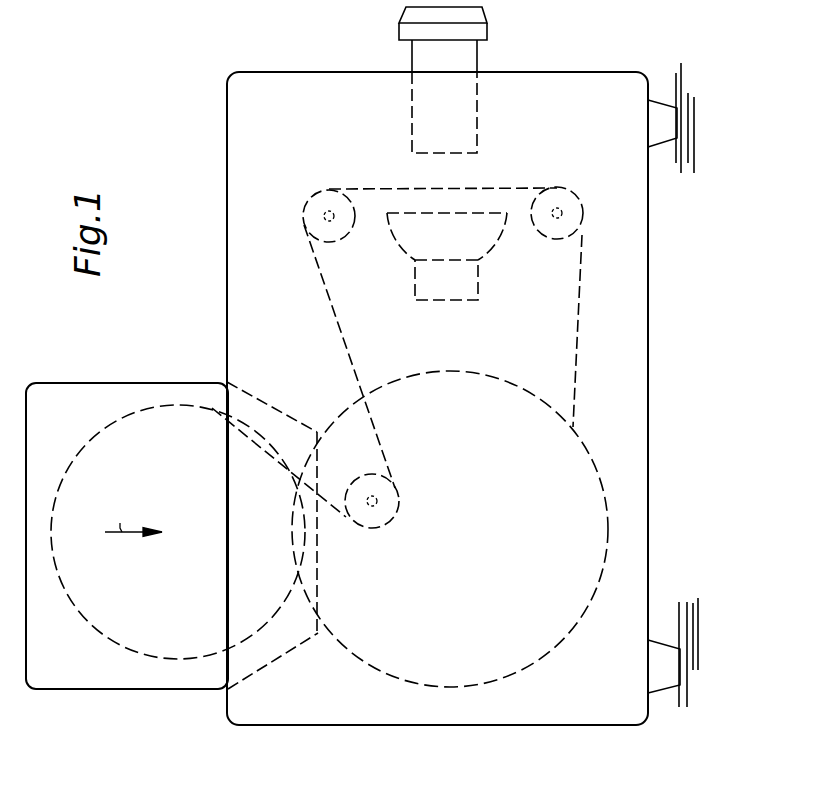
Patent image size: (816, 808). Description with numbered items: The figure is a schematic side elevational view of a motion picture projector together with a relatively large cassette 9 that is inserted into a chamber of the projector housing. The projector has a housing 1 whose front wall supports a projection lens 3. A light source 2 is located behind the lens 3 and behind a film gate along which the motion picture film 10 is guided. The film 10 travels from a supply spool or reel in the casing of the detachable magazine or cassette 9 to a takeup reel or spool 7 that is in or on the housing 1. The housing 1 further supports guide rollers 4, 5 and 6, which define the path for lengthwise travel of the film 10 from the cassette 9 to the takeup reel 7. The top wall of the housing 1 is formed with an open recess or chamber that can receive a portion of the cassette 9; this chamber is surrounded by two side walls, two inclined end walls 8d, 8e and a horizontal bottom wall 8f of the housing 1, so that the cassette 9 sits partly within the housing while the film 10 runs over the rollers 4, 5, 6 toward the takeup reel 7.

The housing 1 is at (226, 302).
The light source 2 is at (410, 243).
The projection lens 3 is at (404, 30).
The guide roller 4 is at (394, 490).
The guide roller 5 is at (329, 191).
The guide roller 6 is at (556, 190).
The takeup reel 7 is at (509, 391).
The inclined end wall 8d is at (262, 397).
The inclined end wall 8e is at (288, 653).
The horizontal bottom wall 8f is at (320, 553).
The cassette 9 is at (100, 384).
The motion picture film 10 is at (327, 294).